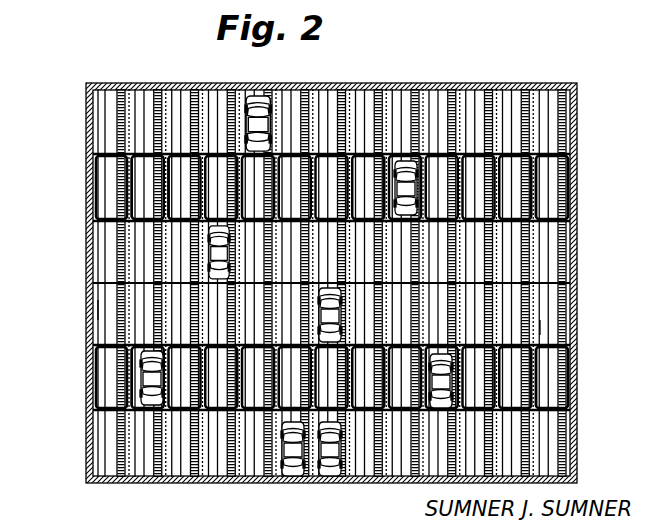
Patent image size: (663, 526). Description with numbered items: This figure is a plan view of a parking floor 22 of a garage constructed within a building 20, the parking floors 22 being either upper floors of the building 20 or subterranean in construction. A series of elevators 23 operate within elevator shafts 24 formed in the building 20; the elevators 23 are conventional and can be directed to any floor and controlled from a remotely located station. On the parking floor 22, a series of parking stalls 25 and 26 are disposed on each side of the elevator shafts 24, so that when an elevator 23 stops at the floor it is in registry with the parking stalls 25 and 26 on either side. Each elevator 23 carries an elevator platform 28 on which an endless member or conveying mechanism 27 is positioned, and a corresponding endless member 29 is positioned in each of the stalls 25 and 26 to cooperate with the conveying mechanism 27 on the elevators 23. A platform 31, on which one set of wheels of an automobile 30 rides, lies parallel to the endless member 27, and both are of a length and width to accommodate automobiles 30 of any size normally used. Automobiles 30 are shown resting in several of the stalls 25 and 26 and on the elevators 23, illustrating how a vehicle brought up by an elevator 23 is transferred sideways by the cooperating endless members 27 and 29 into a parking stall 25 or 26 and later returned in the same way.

The building 20 is at (580, 163).
The parking floors 22 is at (565, 107).
The elevators 23 is at (107, 195).
The elevator shafts 24 is at (422, 222).
The parking stalls 25 is at (88, 255).
The parking stalls 26 is at (102, 92).
The endless member or conveying mechanism 27 is at (115, 163).
The elevator platform 28 is at (107, 265).
The endless member 29 is at (165, 90).
The automobile 30 is at (262, 100).
The platform 31 is at (340, 88).